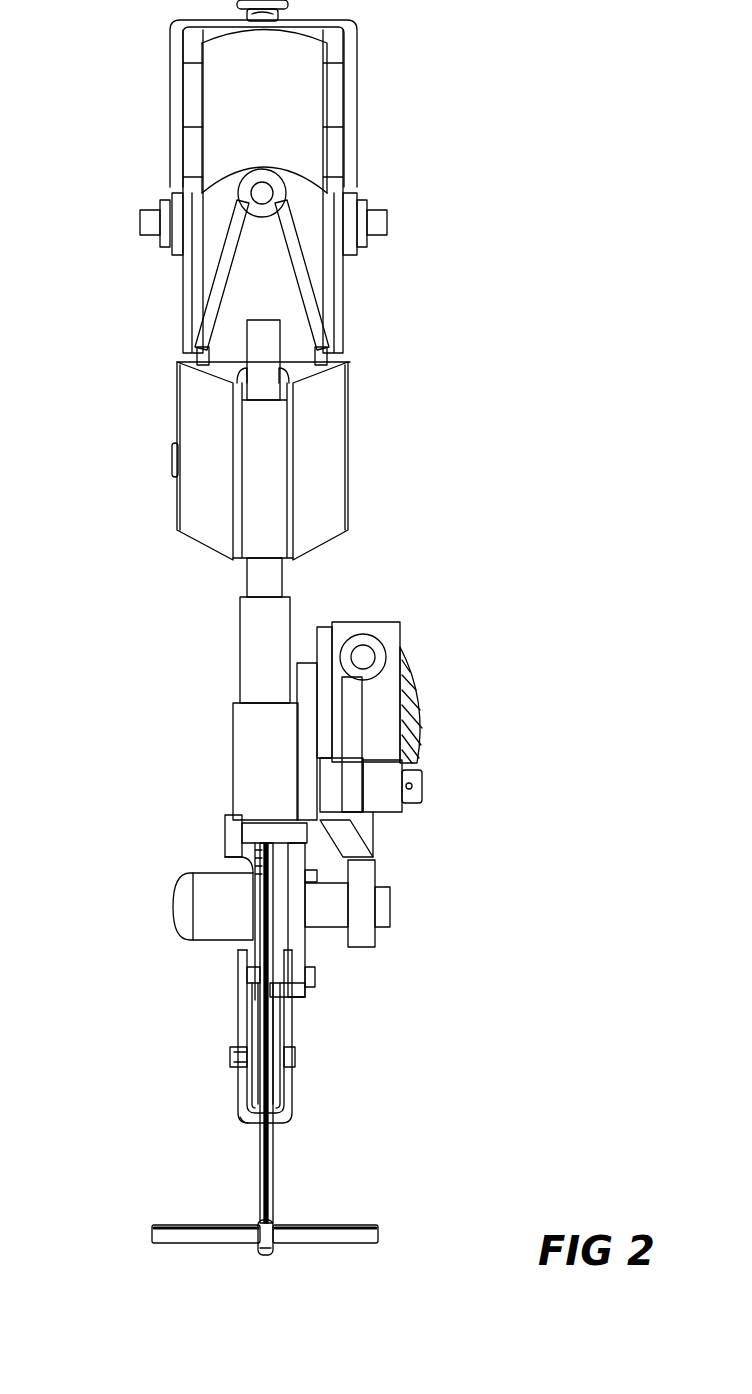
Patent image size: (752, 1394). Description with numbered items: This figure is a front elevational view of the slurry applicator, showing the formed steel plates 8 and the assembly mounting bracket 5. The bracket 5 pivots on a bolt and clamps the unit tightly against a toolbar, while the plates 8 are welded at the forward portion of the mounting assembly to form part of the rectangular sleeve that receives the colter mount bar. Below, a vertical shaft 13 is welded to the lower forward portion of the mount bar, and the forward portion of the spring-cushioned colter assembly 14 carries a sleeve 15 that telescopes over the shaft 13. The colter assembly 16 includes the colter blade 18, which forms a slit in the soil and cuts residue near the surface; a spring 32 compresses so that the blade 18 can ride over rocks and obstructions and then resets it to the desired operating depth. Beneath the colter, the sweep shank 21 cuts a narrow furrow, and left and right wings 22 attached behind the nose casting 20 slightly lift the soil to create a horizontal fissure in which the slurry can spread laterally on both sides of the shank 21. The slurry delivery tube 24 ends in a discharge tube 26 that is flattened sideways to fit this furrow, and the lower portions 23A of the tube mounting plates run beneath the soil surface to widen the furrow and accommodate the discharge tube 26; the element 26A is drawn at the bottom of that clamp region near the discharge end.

The bracket 5 is at (307, 273).
The formed steel plates 8 is at (333, 447).
The vertical shaft 13 is at (255, 658).
The sleeve 15 is at (245, 772).
The spring 32 is at (413, 737).
The spring-cushioned colter assembly 14 is at (413, 878).
The slurry delivery tube 24 is at (232, 843).
The colter blade 18 is at (273, 1182).
The discharge tube 26 is at (240, 1005).
The lower portions of tube mounting plates 23A is at (247, 1083).
The clamp bottom 26A is at (245, 1127).
The colter assembly 16 is at (347, 965).
The wings 22 is at (152, 1237).
The nose casting 20 is at (258, 1252).
The sweep shank 21 is at (272, 1253).